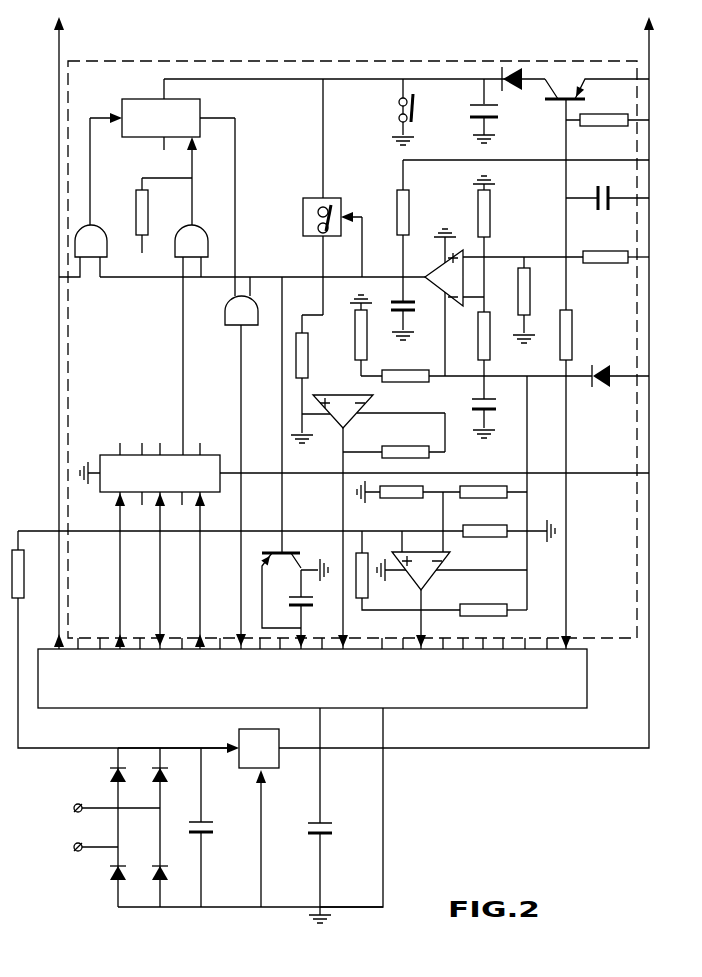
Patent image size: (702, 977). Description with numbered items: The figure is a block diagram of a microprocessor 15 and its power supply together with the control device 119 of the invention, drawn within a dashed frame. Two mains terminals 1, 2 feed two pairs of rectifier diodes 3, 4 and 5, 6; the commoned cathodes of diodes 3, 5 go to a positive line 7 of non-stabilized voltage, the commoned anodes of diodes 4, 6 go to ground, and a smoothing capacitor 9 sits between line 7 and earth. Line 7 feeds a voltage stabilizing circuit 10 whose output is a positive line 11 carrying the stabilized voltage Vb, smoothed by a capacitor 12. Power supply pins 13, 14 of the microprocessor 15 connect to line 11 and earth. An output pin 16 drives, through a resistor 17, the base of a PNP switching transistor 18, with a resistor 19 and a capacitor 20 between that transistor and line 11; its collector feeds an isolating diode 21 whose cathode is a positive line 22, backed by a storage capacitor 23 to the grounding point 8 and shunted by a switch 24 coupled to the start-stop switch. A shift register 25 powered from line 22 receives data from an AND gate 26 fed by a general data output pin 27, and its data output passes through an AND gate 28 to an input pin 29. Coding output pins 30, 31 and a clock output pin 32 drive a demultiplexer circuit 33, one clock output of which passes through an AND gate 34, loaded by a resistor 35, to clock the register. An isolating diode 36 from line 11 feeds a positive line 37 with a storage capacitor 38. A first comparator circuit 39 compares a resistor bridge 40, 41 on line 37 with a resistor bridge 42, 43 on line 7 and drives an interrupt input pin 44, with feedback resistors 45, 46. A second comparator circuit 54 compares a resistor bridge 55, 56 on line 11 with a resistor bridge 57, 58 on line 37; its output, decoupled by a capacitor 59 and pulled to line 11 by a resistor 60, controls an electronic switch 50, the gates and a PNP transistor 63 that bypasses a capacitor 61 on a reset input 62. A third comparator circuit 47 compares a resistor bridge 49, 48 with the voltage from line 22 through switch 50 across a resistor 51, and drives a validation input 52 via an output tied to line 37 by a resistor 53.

The mains terminal 1 is at (75, 808).
The mains terminal 2 is at (75, 848).
The rectifier diode 3 is at (168, 776).
The rectifier diode 4 is at (168, 878).
The rectifier diode 5 is at (108, 776).
The rectifier diode 6 is at (108, 882).
The positive line 7 is at (18, 622).
The grounding point 8 is at (163, 152).
The smoothing capacitor 9 is at (212, 835).
The voltage stabilizing circuit 10 is at (248, 770).
The positive line 11 is at (649, 295).
The smoothing capacitor 12 is at (332, 835).
The power supply pin 13 is at (324, 714).
The power supply pin 14 is at (386, 714).
The microprocessor 15 is at (578, 680).
The output pin 16 is at (570, 641).
The resistor 17 is at (570, 343).
The PNP switching transistor 18 is at (566, 84).
The resistor 19 is at (590, 114).
The capacitor 20 is at (607, 187).
The isolating diode 21 is at (508, 72).
The positive line 22 is at (247, 83).
The storage capacitor 23 is at (500, 111).
The switch 24 is at (410, 104).
The shift register 25 is at (190, 112).
The AND gate 26 is at (86, 228).
The general data output pin 27 is at (65, 640).
The AND gate 28 is at (238, 327).
The input pin 29 is at (238, 636).
The coding output pin 30 is at (115, 638).
The coding output pin 31 is at (155, 638).
The clock output pin 32 is at (197, 638).
The demultiplexer circuit 33 is at (203, 458).
The AND gate 34 is at (190, 229).
The resistor 35 is at (148, 212).
The isolating diode 36 is at (603, 388).
The positive line 37 is at (445, 399).
The storage capacitor 38 is at (488, 402).
The first comparator circuit 39 is at (430, 580).
The resistor 40 is at (484, 501).
The resistor 41 is at (396, 501).
The resistor 42 is at (24, 569).
The resistor 43 is at (474, 537).
The interrupt input pin 44 is at (419, 642).
The resistor 45 is at (501, 617).
The resistor 46 is at (366, 570).
The third comparator circuit 47 is at (343, 428).
The resistor 48 is at (402, 372).
The resistor 49 is at (352, 335).
The electronic switch 50 is at (330, 195).
The resistor 51 is at (296, 352).
The validation input 52 is at (344, 638).
The resistor 53 is at (388, 451).
The second comparator circuit 54 is at (436, 276).
The resistor 55 is at (608, 254).
The resistor 56 is at (534, 294).
The resistor 57 is at (478, 347).
The resistor 58 is at (490, 216).
The capacitor 59 is at (412, 313).
The resistor 60 is at (409, 203).
The capacitor 61 is at (303, 611).
The reset input 62 is at (296, 633).
The PNP transistor 63 is at (291, 550).
The control device 119 is at (140, 61).